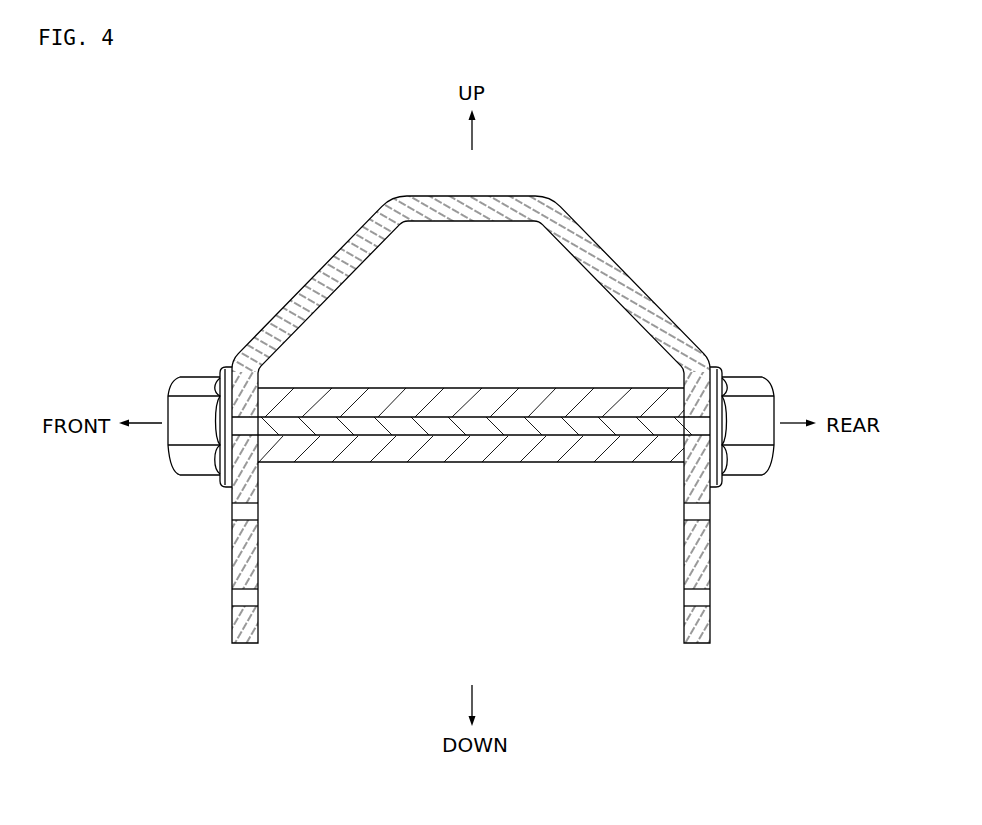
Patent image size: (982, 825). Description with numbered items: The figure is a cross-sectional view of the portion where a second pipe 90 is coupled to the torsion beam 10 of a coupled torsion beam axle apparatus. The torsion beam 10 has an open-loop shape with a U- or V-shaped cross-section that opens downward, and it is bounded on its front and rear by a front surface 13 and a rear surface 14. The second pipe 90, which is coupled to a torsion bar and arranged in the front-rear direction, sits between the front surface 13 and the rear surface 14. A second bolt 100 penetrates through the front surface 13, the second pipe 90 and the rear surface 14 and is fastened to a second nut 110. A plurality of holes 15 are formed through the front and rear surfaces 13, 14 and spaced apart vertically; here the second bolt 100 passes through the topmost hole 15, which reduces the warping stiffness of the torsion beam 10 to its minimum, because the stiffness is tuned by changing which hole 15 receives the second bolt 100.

The torsion beam 10 is at (534, 190).
The front surface 13 is at (232, 622).
The rear surface 14 is at (710, 622).
The hole 15 is at (234, 372).
The second pipe 90 is at (527, 445).
The second bolt 100 is at (196, 388).
The second nut 110 is at (748, 388).